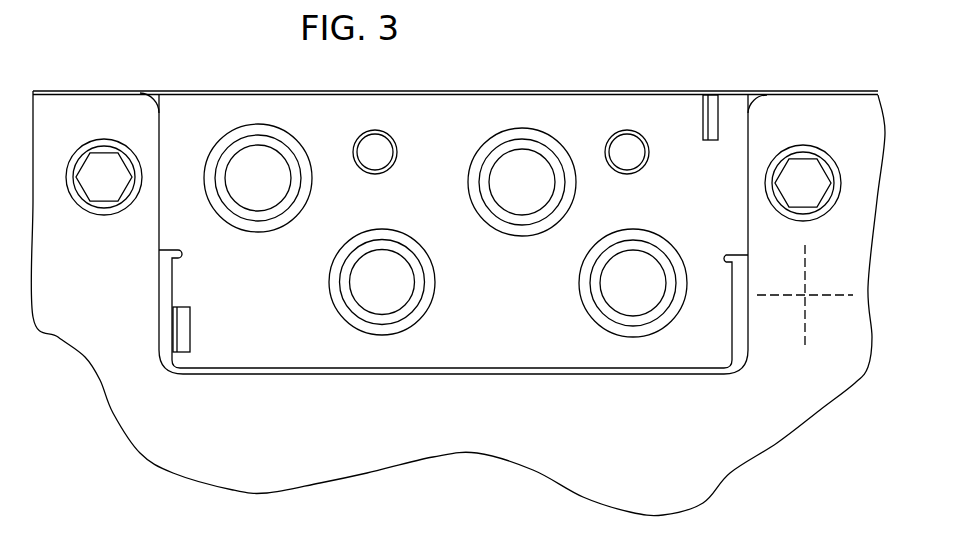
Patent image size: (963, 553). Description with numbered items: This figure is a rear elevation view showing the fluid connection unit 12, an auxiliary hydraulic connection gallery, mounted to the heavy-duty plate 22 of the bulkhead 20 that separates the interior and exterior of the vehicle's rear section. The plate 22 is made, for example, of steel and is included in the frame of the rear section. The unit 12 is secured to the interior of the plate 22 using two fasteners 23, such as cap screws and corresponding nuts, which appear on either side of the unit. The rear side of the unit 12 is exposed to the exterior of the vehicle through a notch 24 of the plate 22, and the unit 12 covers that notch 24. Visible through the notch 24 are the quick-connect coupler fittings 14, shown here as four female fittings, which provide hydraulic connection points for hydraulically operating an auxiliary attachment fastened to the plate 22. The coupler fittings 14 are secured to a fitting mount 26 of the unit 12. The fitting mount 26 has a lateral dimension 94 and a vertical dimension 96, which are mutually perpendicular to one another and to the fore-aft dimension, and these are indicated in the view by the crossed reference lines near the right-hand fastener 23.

The fluid connection unit 12 is at (662, 68).
The quick-connect coupler fittings 14 is at (333, 298).
The bulkhead 20 is at (227, 77).
The heavy-duty plate 22 is at (845, 118).
The fasteners 23 is at (105, 168).
The notch 24 is at (248, 368).
The fitting mount 26 is at (445, 385).
The lateral dimension 94 is at (775, 297).
The vertical dimension 96 is at (803, 322).